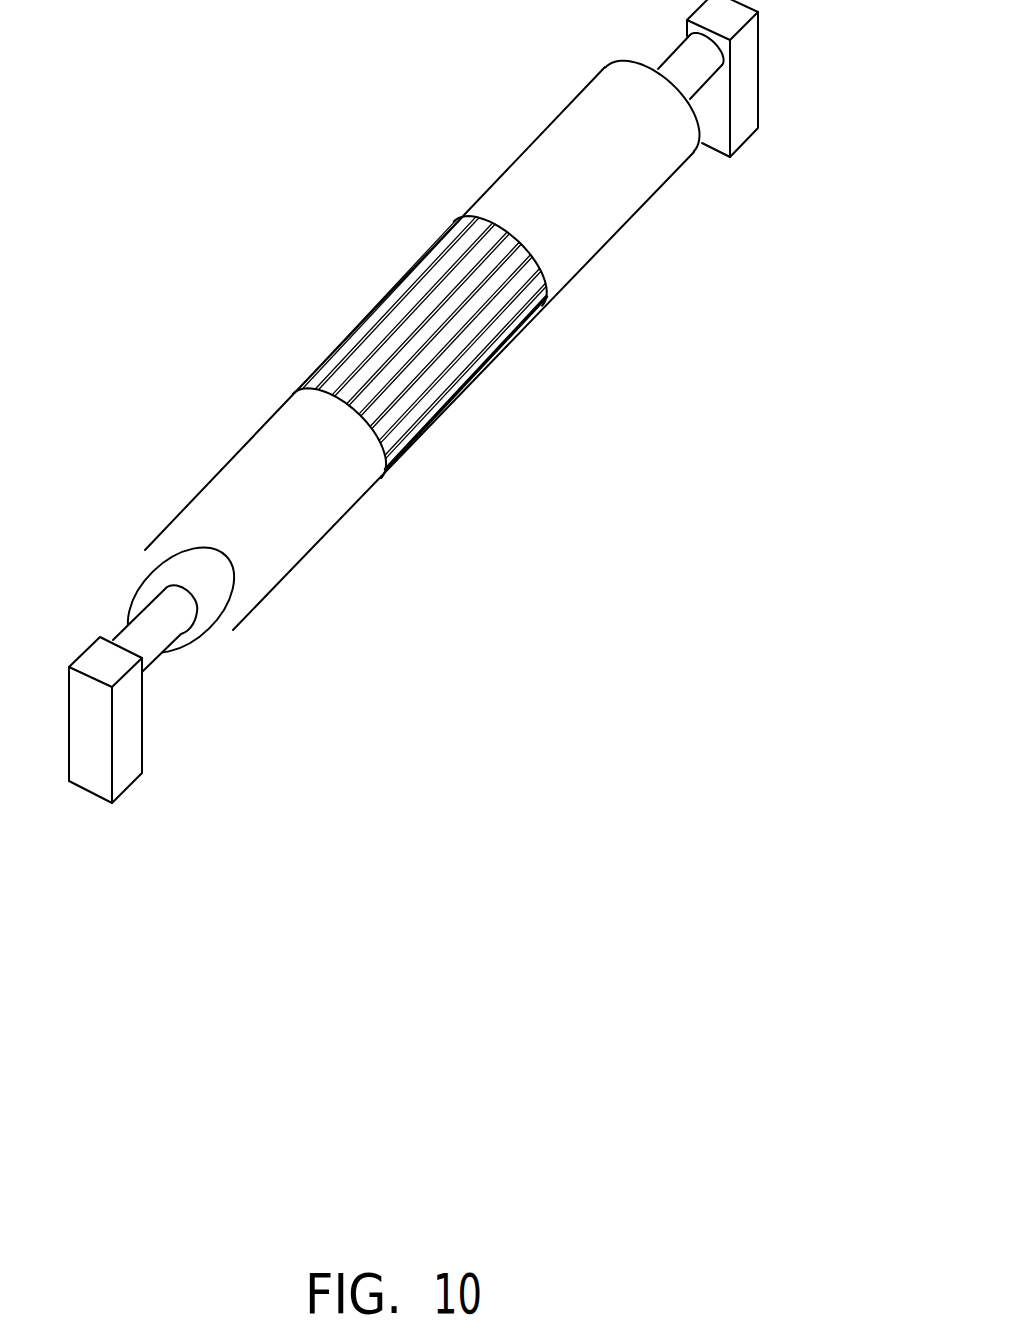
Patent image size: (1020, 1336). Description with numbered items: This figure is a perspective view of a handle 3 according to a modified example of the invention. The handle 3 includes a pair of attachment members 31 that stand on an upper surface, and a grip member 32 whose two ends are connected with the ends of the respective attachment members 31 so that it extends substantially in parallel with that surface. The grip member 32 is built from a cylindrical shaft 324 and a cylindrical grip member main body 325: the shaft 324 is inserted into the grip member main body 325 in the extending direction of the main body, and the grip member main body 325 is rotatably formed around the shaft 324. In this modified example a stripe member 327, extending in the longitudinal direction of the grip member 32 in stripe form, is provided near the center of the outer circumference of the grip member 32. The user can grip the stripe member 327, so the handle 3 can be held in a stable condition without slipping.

The handle 3 is at (307, 150).
The attachment member 31 is at (748, 107).
The grip member 32 is at (248, 282).
The cylindrical shaft 324 is at (157, 642).
The grip member main body 325 is at (305, 527).
The stripe member 327 is at (472, 352).